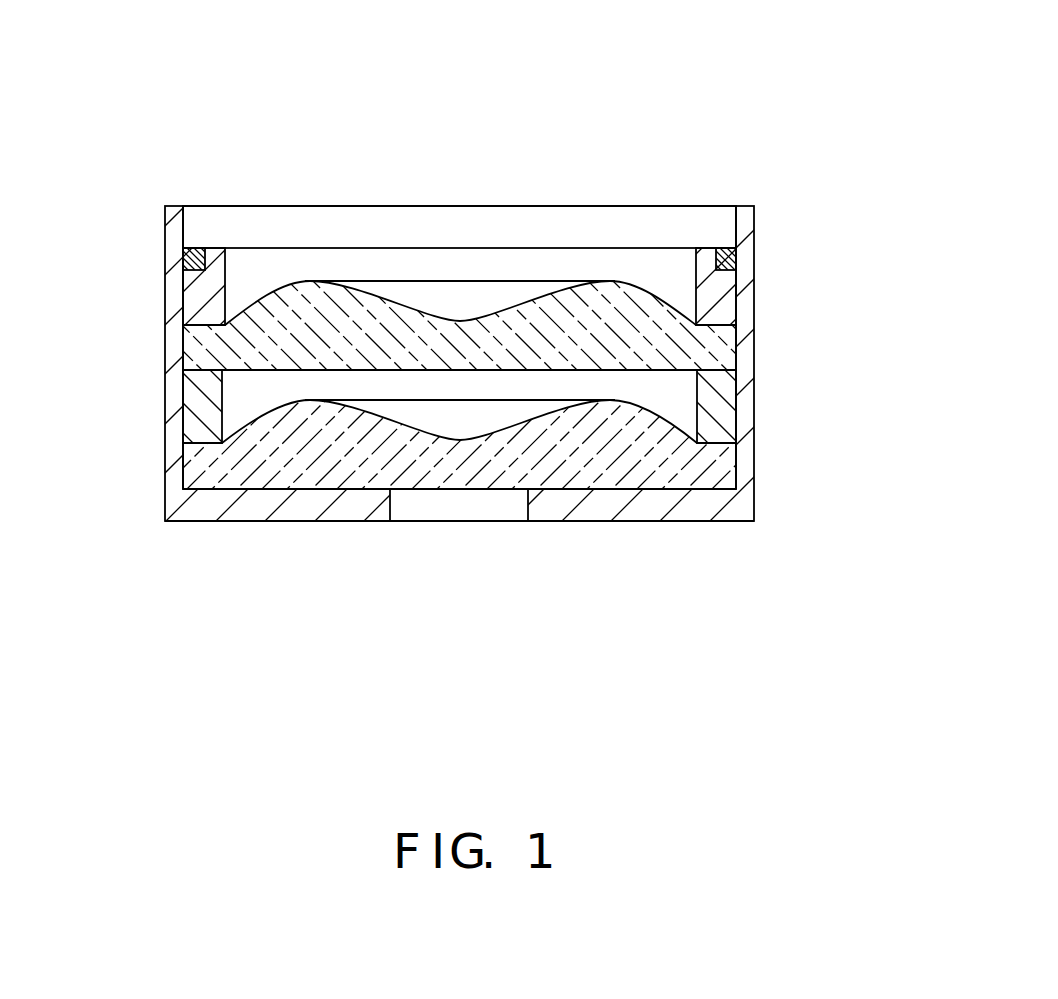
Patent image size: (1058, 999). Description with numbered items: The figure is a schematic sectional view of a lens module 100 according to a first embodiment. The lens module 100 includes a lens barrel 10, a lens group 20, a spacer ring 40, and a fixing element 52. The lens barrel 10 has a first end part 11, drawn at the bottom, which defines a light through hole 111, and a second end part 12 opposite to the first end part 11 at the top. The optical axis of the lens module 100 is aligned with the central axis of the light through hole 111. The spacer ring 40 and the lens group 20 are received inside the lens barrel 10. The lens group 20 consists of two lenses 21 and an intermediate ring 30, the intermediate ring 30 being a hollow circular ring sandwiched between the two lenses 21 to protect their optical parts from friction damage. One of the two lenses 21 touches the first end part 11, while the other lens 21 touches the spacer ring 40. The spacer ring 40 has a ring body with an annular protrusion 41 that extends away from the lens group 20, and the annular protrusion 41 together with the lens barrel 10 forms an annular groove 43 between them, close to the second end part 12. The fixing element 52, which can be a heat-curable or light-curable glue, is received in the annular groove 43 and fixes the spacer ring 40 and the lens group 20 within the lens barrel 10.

The lens module 100 is at (548, 97).
The lens barrel 10 is at (747, 396).
The first end part 11 is at (242, 510).
The light through hole 111 is at (447, 507).
The second end part 12 is at (185, 228).
The lens group 20 is at (94, 350).
The lens 21 is at (220, 345).
The intermediate ring 30 is at (203, 402).
The spacer ring 40 is at (208, 277).
The annular protrusion 41 is at (706, 258).
The annular groove 43 is at (695, 262).
The fixing element 52 is at (190, 258).